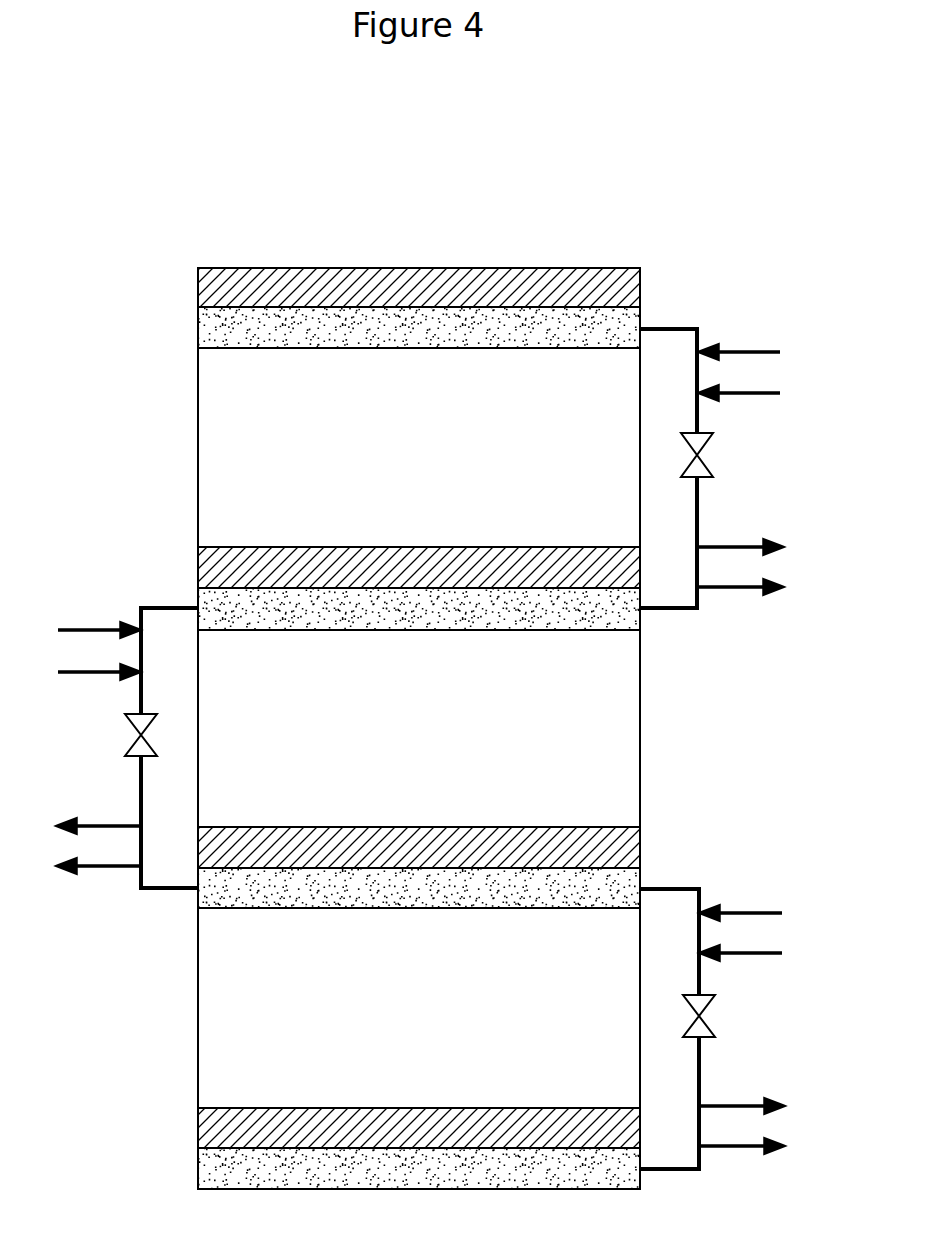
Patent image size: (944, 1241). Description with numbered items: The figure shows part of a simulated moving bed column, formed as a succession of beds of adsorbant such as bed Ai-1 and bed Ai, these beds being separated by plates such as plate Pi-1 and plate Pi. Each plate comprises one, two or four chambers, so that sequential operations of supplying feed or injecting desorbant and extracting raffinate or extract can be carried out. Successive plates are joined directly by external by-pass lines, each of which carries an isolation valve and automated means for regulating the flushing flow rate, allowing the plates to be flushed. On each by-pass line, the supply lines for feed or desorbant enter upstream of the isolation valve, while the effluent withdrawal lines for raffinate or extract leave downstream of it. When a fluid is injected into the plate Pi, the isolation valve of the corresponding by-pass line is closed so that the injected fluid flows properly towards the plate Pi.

The plate Pi-1 is at (419, 308).
The plate Pi is at (419, 588).
The bed of adsorbant Ai-1 is at (419, 447).
The bed of adsorbant Ai is at (419, 728).